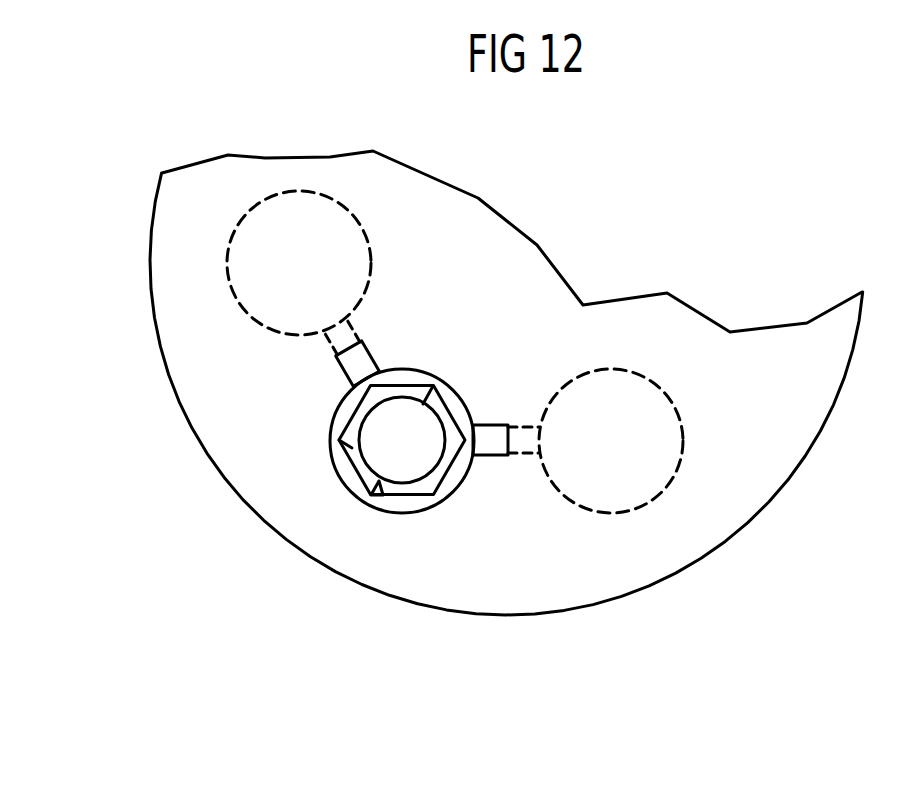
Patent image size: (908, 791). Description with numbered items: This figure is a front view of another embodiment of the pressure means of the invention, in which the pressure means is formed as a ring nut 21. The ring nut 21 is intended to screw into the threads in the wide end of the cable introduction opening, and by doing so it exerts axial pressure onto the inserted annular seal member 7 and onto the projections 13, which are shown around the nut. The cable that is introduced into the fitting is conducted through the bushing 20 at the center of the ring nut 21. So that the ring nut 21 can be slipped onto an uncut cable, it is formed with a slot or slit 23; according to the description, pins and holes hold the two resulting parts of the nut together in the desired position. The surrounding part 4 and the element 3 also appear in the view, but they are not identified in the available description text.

The cross-pin / leader element 3 is at (507, 377).
The toothed body plate 4 is at (235, 462).
The annular seal member 7 is at (458, 403).
The projections 13 is at (338, 374).
The bushing 20 is at (397, 433).
The ring nut 21 is at (350, 450).
The slot or slit 23 is at (386, 494).